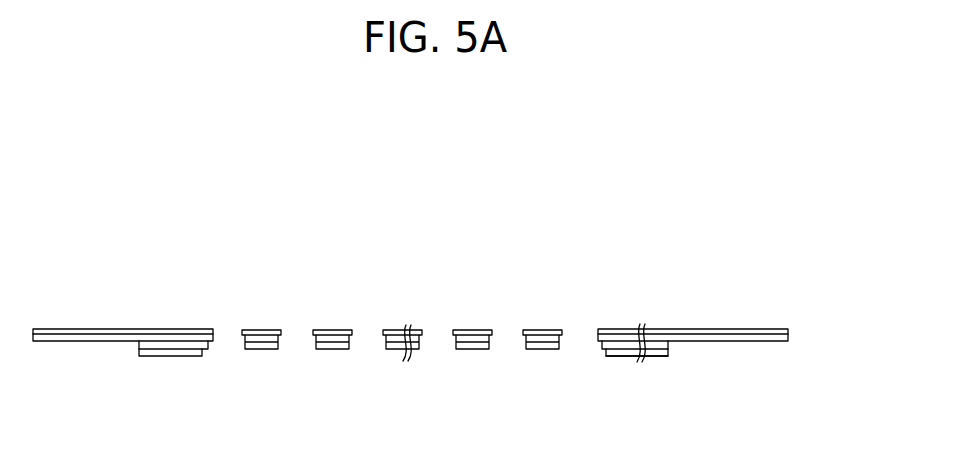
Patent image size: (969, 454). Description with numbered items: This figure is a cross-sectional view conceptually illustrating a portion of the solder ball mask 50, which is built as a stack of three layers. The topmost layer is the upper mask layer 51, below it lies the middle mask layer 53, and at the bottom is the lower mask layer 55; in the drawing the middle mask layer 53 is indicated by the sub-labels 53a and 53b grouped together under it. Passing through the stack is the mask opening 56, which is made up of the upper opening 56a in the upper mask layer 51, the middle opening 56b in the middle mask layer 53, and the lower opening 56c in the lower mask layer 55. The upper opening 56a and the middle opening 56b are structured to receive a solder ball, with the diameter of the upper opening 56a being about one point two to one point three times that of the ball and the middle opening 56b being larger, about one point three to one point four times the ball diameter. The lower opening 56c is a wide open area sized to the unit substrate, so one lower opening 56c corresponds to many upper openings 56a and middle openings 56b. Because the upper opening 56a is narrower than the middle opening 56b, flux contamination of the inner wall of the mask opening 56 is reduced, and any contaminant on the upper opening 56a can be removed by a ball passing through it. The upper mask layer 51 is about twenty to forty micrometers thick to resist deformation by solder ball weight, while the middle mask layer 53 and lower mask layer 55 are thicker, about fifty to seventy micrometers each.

The solder ball mask 50 is at (456, 212).
The upper mask layer 51 is at (788, 330).
The middle mask layer 53 is at (852, 319).
The first electrode layer 53a is at (788, 337).
The second electrode layer 53b is at (668, 348).
The lower mask layer 55 is at (668, 356).
The mask opening 56 is at (338, 258).
The upper opening 56a is at (303, 323).
The middle opening 56b is at (294, 358).
The lower opening 56c is at (295, 343).